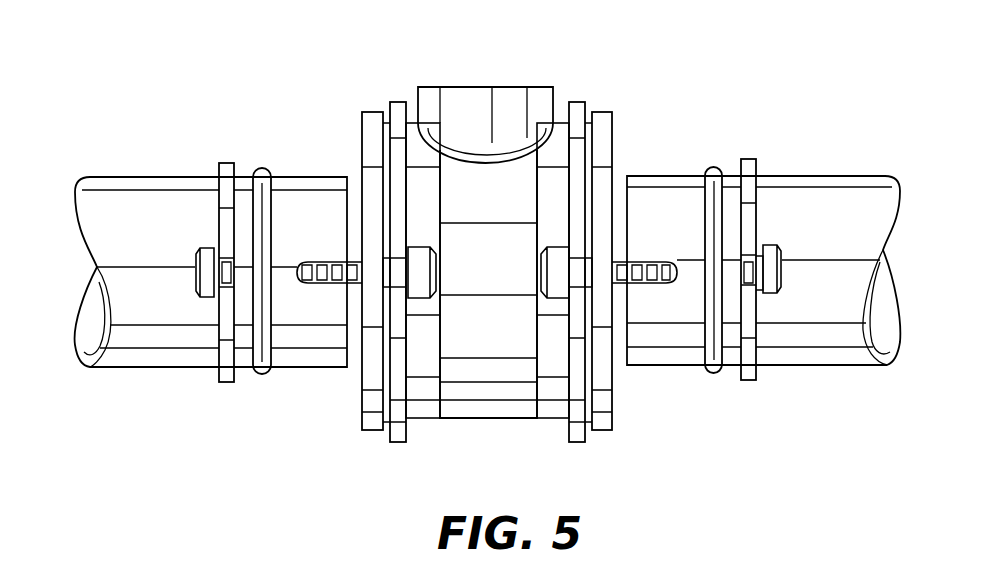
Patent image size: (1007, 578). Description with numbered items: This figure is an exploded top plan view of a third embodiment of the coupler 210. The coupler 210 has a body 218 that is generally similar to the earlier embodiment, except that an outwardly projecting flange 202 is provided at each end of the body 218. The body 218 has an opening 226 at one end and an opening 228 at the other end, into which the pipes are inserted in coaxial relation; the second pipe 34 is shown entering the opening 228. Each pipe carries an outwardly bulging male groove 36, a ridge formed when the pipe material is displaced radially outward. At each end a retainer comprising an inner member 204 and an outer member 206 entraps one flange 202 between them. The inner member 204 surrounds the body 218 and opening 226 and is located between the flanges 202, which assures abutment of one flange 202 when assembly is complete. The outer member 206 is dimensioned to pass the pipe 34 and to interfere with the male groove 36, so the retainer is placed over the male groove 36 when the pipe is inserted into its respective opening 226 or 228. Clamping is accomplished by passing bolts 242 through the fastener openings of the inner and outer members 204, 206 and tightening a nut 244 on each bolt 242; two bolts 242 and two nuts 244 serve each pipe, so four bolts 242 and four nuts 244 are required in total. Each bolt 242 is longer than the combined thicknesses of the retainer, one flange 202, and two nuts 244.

The second pipe 34 is at (858, 172).
The male groove 36 is at (718, 380).
The outwardly projecting flange 202 is at (620, 131).
The inner member 204 is at (577, 98).
The outer member 206 is at (228, 389).
The coupler 210 is at (629, 71).
The body 218 is at (450, 80).
The opening 226 is at (343, 162).
The opening 228 is at (629, 172).
The bolt 242 is at (302, 262).
The nut 244 is at (195, 278).